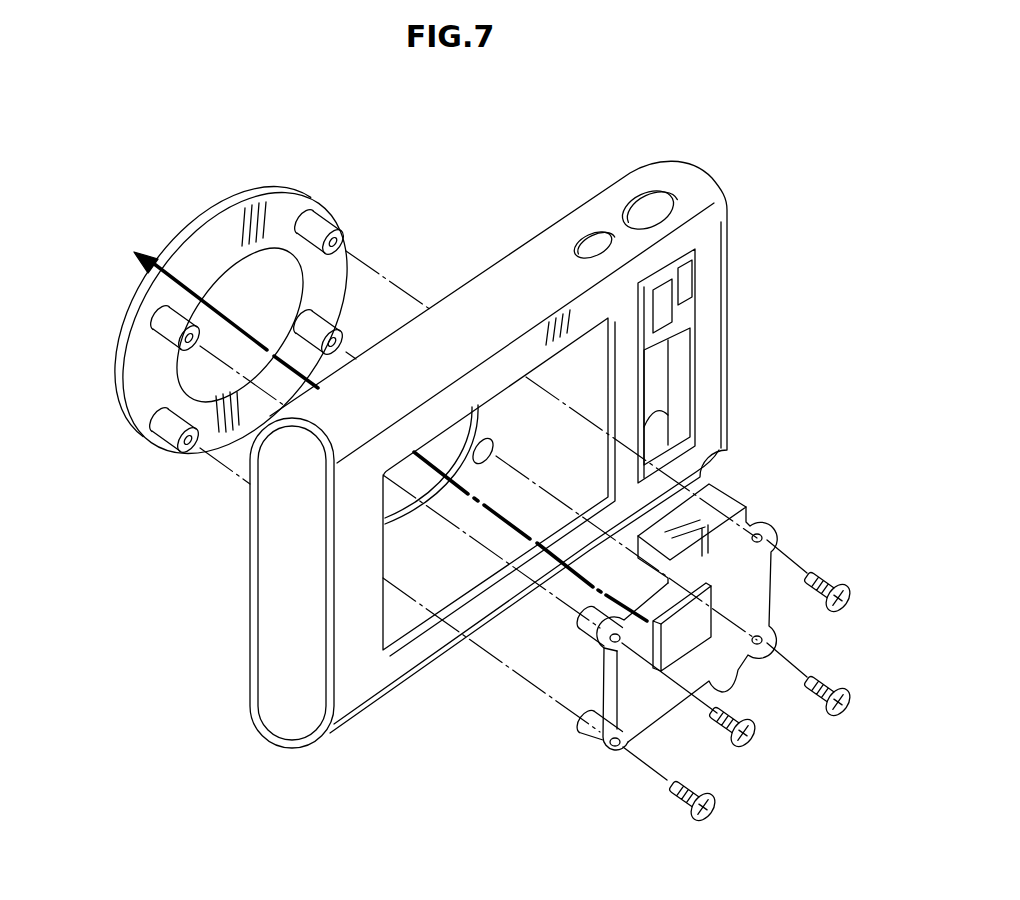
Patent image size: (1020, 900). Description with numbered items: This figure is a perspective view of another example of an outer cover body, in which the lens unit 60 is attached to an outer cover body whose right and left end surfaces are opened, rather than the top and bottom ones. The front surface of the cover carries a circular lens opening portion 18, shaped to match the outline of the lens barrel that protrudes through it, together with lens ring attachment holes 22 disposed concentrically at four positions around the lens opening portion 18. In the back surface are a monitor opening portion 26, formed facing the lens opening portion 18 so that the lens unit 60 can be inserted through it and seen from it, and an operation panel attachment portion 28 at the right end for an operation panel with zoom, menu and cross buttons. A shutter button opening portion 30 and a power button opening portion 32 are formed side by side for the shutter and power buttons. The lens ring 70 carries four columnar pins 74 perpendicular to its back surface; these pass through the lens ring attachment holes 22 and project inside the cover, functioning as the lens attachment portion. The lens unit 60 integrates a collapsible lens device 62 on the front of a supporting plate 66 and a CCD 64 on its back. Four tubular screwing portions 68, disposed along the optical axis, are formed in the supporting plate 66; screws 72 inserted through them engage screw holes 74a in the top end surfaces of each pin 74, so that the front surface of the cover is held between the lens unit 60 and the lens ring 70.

The lens opening portion 18 is at (457, 415).
The lens ring attachment holes 22 is at (498, 447).
The monitor opening portion 26 is at (418, 630).
The operation panel attachment portion 28 is at (677, 325).
The shutter button opening portion 30 is at (648, 195).
The power button opening portion 32 is at (598, 237).
The lens unit 60 is at (786, 478).
The lens device 62 is at (600, 668).
The CCD 64 is at (688, 637).
The supporting plate 66 is at (738, 582).
The screwing portions 68 is at (598, 628).
The lens ring 70 is at (213, 270).
The screws 72 is at (850, 610).
The columnar pins 74 is at (314, 212).
The screw holes 74a is at (336, 240).